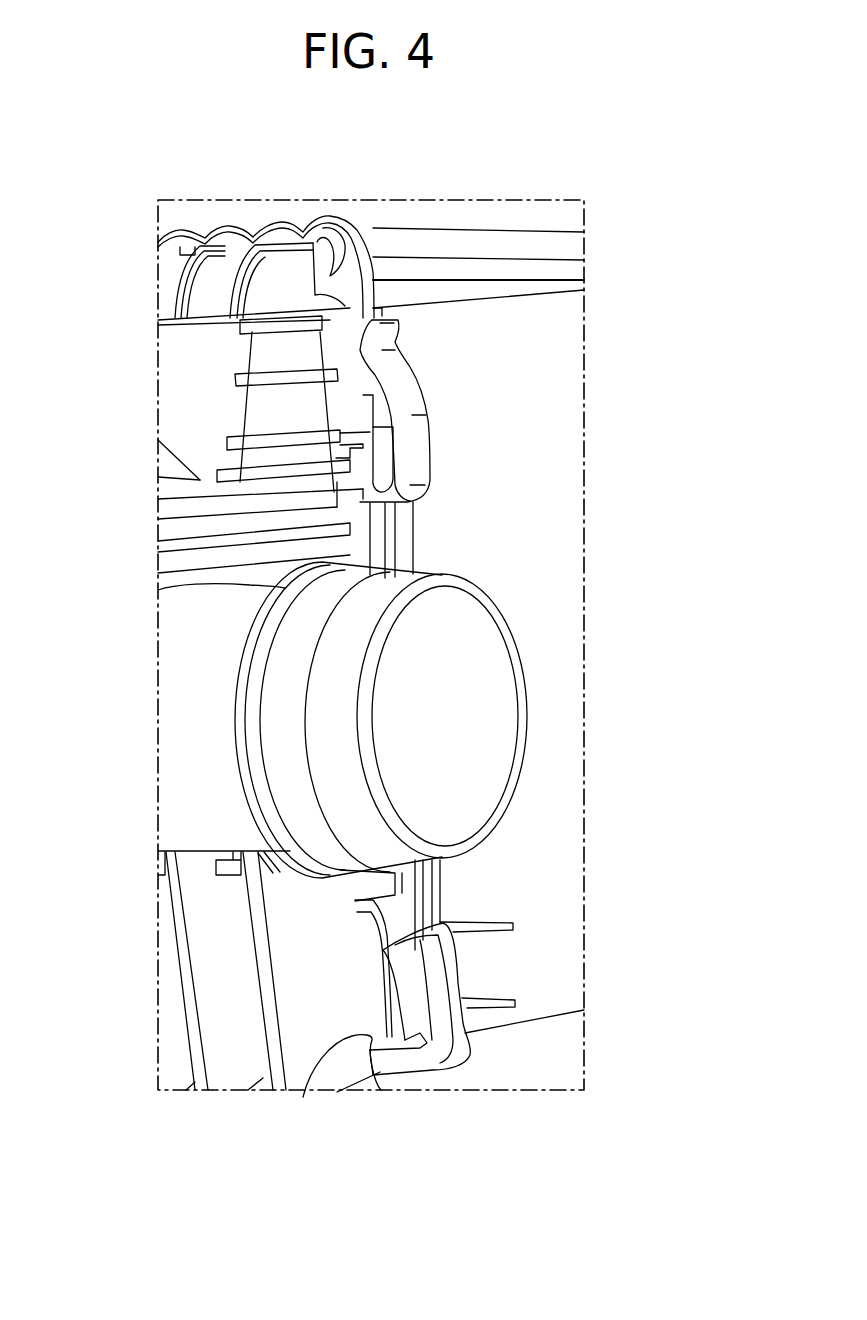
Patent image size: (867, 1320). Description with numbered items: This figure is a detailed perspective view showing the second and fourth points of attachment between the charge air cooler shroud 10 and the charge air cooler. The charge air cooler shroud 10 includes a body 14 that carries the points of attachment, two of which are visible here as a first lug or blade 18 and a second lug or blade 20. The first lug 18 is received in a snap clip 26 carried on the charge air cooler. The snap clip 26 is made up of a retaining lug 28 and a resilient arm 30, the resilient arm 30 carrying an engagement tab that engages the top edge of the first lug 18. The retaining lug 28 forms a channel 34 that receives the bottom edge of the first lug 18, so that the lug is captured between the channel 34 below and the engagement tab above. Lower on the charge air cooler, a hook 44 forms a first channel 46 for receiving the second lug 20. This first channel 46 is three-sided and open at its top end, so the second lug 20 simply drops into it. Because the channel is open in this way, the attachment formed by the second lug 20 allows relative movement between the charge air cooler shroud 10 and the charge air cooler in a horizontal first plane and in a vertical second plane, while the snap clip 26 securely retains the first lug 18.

The charge air cooler shroud 10 is at (654, 229).
The body 14 is at (520, 562).
The first lug or blade 18 is at (362, 396).
The second lug or blade 20 is at (397, 995).
The snap clip 26 is at (425, 361).
The retaining lug 28 is at (362, 436).
The resilient arm 30 is at (415, 415).
The channel 34 is at (370, 448).
The hook 44 is at (433, 1047).
The first channel 46 is at (312, 1075).